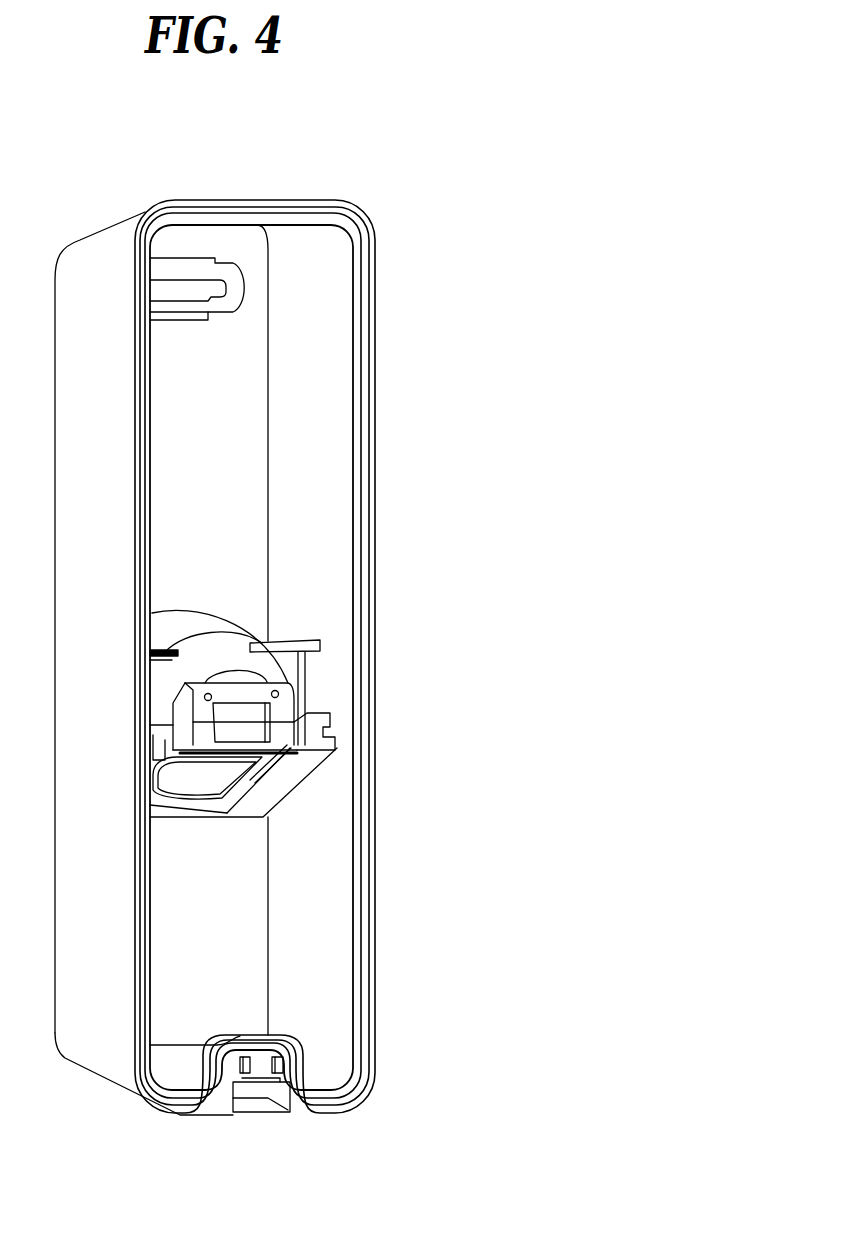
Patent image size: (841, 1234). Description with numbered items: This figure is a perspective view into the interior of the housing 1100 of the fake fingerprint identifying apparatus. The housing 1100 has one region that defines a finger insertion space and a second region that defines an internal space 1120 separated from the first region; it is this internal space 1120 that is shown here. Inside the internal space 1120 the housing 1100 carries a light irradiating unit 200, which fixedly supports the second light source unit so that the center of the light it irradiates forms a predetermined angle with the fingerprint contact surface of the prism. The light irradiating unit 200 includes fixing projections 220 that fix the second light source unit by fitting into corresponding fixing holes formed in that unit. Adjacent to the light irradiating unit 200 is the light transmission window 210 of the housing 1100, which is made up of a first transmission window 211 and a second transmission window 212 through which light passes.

The housing 1100 is at (394, 414).
The internal space 1120 is at (332, 940).
The light irradiating unit 200 is at (538, 683).
The fixing projections 220 is at (209, 692).
The light transmission window 210 is at (476, 738).
The second transmission window 212 is at (257, 712).
The first transmission window 211 is at (253, 732).